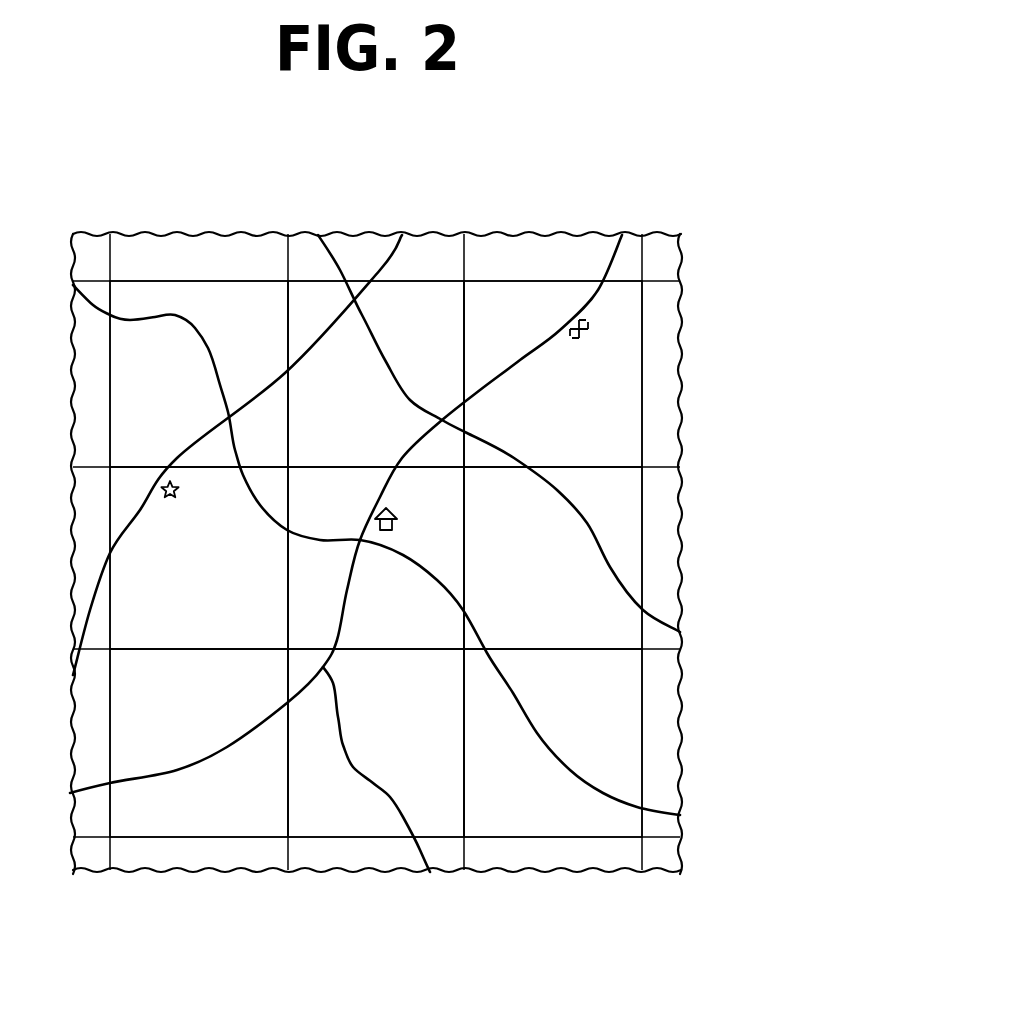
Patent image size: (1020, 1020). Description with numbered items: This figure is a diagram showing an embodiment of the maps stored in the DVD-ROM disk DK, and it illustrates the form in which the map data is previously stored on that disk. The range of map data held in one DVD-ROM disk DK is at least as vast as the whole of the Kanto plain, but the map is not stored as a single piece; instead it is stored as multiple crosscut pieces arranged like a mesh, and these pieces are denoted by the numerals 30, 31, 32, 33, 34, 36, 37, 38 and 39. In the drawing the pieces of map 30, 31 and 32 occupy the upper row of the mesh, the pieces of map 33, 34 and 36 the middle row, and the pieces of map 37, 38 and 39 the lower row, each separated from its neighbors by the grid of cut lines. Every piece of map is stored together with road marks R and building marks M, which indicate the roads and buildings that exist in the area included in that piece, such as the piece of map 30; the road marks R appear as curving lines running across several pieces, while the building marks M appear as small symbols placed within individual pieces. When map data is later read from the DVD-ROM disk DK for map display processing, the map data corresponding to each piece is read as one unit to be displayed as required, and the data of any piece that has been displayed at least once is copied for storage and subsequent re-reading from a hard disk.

The piece of map 30 is at (236, 319).
The piece of map 31 is at (411, 321).
The piece of map 32 is at (599, 319).
The piece of map 33 is at (233, 637).
The piece of map 34 is at (418, 510).
The piece of map 36 is at (586, 510).
The piece of map 37 is at (233, 695).
The piece of map 38 is at (416, 690).
The piece of map 39 is at (587, 690).
The road mark R is at (208, 362).
The building mark M is at (170, 500).
The DVD-ROM disk DK is at (587, 886).